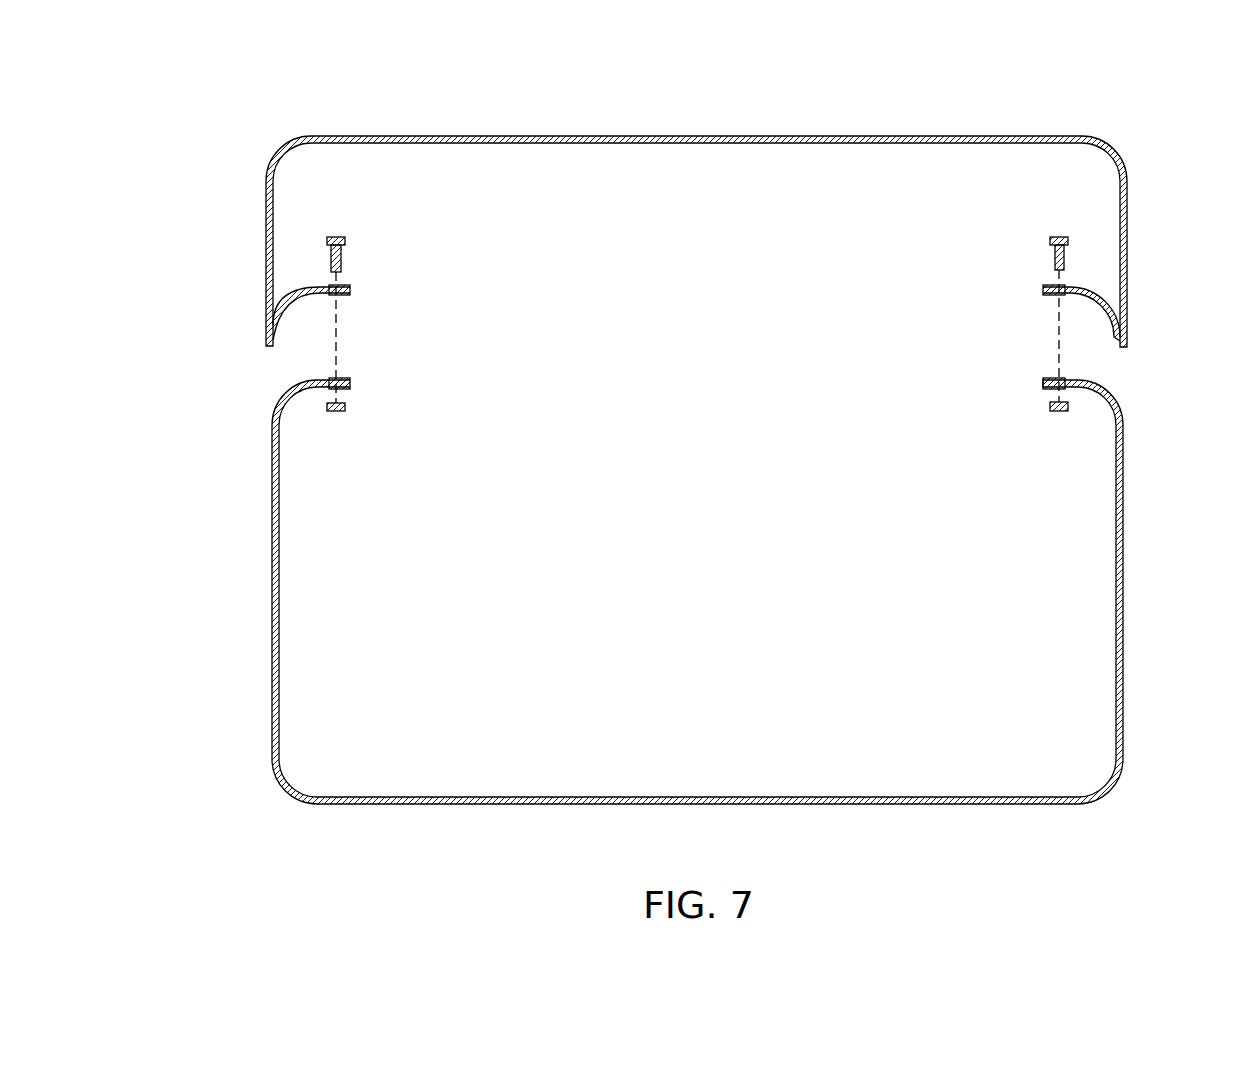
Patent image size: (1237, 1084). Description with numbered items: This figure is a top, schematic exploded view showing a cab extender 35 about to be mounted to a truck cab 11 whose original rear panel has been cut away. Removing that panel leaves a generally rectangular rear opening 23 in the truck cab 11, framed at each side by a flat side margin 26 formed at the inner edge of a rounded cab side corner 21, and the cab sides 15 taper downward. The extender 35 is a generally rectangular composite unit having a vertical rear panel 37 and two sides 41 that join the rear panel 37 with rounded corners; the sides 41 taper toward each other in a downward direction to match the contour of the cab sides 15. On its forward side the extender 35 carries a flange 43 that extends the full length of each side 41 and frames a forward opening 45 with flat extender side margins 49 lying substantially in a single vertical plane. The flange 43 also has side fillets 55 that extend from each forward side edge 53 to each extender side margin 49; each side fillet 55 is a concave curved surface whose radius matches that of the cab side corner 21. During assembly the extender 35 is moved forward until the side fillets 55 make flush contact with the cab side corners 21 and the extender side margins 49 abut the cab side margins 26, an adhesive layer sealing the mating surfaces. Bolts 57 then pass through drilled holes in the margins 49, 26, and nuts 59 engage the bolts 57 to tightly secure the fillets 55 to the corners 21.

The truck cab 11 is at (653, 584).
The cab sides 15 is at (272, 490).
The cab side corners 21 is at (284, 398).
The rear opening 23 is at (1050, 388).
The side margins 26 is at (352, 383).
The extender 35 is at (704, 235).
The rear panel 37 is at (807, 136).
The sides 41 is at (1128, 276).
The flange 43 is at (266, 321).
The forward opening 45 is at (1058, 293).
The extender side margins 49 is at (352, 290).
The forward side edge 53 is at (1127, 347).
The side fillets 55 is at (1100, 307).
The bolts 57 is at (346, 242).
The nuts 59 is at (347, 408).